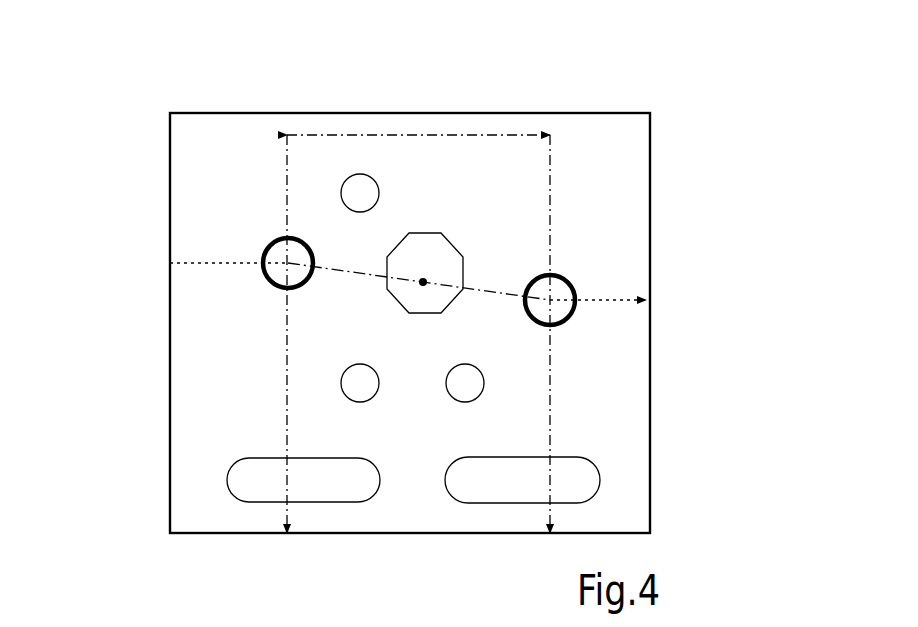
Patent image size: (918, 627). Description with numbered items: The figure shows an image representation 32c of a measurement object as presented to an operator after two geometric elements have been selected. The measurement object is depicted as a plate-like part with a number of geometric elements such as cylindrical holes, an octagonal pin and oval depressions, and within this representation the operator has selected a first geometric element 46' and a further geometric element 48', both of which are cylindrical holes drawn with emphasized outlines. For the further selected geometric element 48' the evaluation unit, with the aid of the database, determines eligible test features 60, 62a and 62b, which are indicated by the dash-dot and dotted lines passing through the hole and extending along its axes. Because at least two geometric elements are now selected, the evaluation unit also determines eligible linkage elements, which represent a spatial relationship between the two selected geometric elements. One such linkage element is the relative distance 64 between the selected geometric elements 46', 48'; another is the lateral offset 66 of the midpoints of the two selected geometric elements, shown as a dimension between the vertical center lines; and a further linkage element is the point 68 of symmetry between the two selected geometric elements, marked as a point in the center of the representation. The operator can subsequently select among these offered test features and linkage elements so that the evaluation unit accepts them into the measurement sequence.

The image representation 32c is at (613, 170).
The selected geometric element 46' is at (178, 193).
The further selected geometric element 48' is at (654, 267).
The test feature 60 is at (565, 318).
The test feature 62a is at (552, 428).
The test feature 62b is at (615, 302).
The relative distance 64 is at (478, 290).
The lateral offset 66 is at (330, 133).
The point of symmetry 68 is at (424, 287).